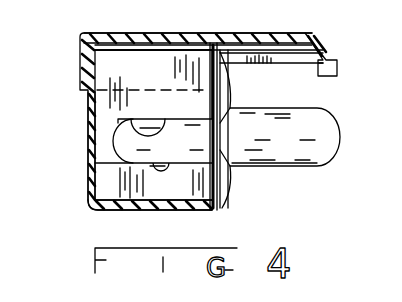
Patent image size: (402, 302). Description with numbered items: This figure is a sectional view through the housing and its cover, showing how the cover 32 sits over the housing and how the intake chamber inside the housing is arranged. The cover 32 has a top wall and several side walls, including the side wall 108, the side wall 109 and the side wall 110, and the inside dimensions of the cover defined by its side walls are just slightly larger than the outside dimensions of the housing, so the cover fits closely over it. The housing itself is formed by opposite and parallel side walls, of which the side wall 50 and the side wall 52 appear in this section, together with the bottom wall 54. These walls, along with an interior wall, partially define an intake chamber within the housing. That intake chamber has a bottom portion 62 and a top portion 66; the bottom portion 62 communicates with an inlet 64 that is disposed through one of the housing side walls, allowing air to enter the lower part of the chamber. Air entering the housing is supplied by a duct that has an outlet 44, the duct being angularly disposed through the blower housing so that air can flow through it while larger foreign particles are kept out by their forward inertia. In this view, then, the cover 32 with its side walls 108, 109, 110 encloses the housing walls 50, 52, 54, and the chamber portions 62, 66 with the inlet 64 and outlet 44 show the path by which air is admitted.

The side wall 108 is at (81, 38).
The cover 32 is at (278, 34).
The side wall 110 is at (328, 43).
The top portion 66 is at (96, 70).
The side wall 109 is at (230, 60).
The outlet 44 is at (162, 133).
The side wall 50 is at (89, 124).
The bottom portion 62 is at (103, 178).
The inlet 64 is at (165, 180).
The bottom wall 54 is at (110, 211).
The side wall 52 is at (221, 193).